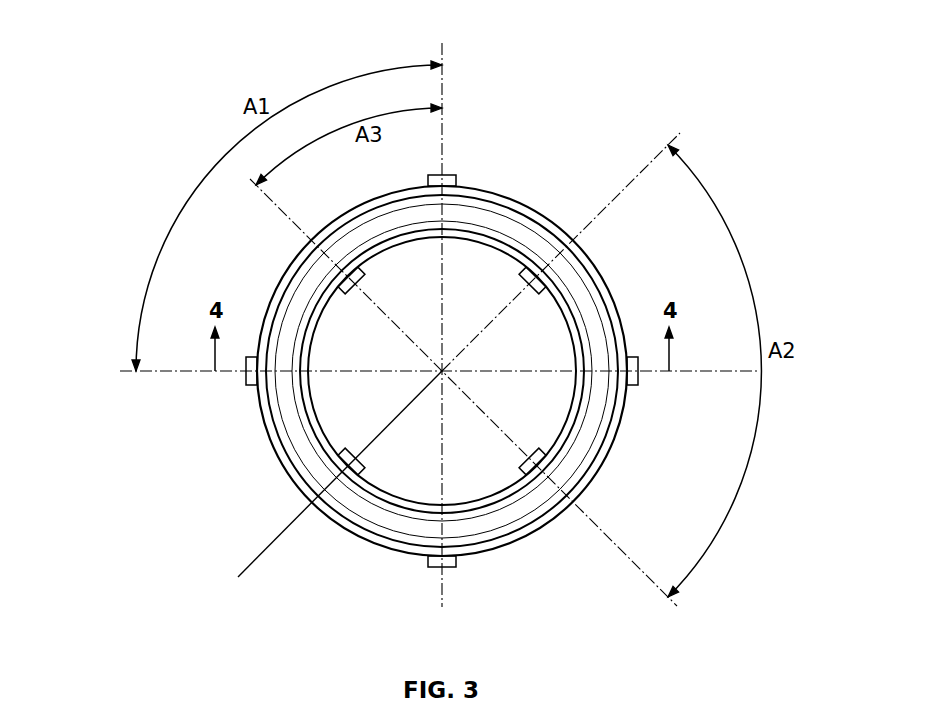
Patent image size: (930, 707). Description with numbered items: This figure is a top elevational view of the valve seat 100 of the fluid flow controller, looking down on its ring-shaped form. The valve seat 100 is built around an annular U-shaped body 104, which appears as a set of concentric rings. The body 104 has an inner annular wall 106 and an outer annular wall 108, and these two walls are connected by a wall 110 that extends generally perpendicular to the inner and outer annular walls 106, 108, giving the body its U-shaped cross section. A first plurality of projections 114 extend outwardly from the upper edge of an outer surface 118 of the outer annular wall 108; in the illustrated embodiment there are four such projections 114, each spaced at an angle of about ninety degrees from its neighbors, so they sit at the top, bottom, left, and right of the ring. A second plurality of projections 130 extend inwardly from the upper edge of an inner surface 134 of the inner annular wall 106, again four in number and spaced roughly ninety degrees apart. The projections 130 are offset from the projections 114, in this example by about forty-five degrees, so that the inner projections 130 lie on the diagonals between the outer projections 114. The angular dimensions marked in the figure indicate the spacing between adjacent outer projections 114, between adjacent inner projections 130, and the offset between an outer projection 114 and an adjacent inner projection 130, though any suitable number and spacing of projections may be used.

The valve seat 100 is at (137, 44).
The annular U-shaped body 104 is at (385, 517).
The inner annular wall 106 is at (492, 496).
The outer annular wall 108 is at (555, 523).
The wall 110 is at (593, 425).
The first plurality of projections 114 is at (455, 175).
The outer surface 118 is at (272, 450).
The second plurality of projections 130 is at (358, 292).
The inner surface 134 is at (393, 245).